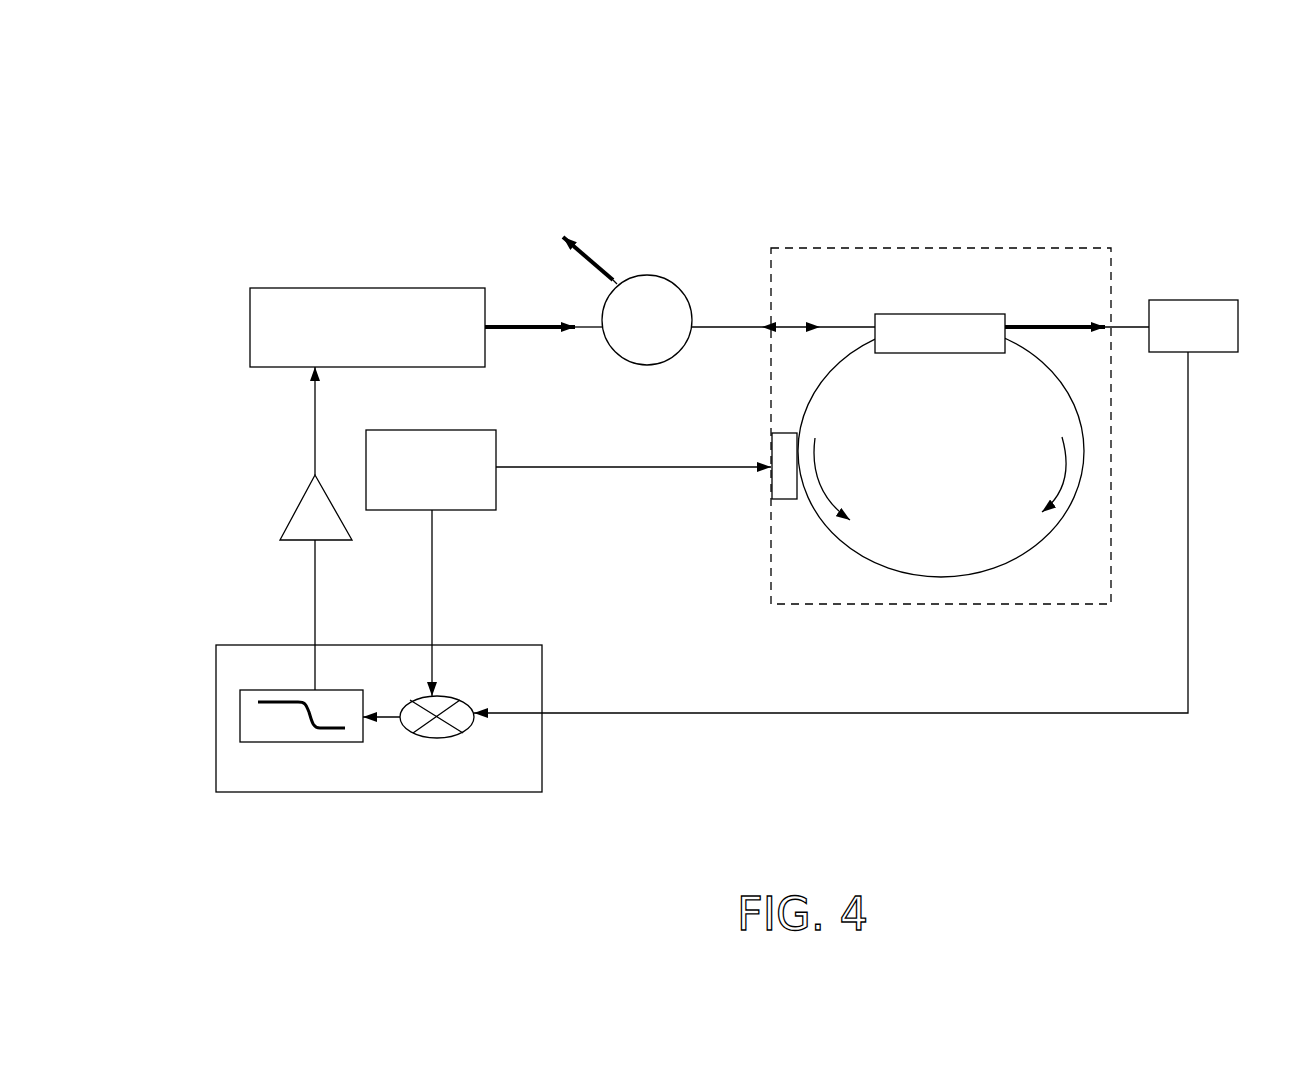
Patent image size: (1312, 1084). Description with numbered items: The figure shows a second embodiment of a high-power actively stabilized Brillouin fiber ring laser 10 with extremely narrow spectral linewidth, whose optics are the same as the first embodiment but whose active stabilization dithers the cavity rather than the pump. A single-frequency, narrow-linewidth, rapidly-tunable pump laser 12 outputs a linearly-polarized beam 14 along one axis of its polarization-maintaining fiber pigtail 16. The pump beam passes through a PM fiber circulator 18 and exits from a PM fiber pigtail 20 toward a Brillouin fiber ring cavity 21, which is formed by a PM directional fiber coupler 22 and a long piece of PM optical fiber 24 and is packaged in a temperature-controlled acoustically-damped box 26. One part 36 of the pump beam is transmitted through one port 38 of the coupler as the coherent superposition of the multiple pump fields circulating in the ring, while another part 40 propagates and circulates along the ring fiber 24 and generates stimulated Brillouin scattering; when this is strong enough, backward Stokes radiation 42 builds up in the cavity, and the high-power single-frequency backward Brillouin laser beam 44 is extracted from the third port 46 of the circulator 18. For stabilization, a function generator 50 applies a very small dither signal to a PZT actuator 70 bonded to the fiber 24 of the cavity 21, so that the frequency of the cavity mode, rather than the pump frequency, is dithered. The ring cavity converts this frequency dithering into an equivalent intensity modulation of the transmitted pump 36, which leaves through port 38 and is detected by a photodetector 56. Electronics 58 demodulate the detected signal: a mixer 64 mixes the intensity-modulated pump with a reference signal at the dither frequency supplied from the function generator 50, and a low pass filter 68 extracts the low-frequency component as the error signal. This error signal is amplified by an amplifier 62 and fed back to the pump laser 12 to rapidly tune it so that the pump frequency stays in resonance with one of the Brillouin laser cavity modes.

The Brillouin fiber ring laser 10 is at (367, 192).
The pump laser 12 is at (250, 333).
The linearly-polarized beam 14 is at (528, 323).
The polarization-maintaining fiber pigtail 16 is at (587, 328).
The polarization-maintaining fiber circulator 18 is at (645, 365).
The PM fiber pigtail 20 is at (737, 332).
The Brillouin fiber ring cavity 21 is at (823, 567).
The PM directional fiber coupler 22 is at (927, 311).
The PM optical fiber 24 is at (945, 577).
The temperature-controlled acoustically-damped box 26 is at (955, 248).
The transmitted part of the pump beam 36 is at (1073, 325).
The port of the fiber coupler 38 is at (1015, 325).
The circulating part of the pump beam 40 is at (1039, 474).
The backward Stokes radiation 42 is at (850, 479).
The backward Brillouin laser beam 44 is at (602, 268).
The third port of the PM fiber circulator 46 is at (613, 280).
The function generator 50 is at (497, 500).
The photodetector 56 is at (1197, 300).
The electronics 58 is at (216, 693).
The amplifier 62 is at (292, 512).
The mixer 64 is at (447, 738).
The low pass filter 68 is at (290, 737).
The PZT actuator 70 is at (770, 480).